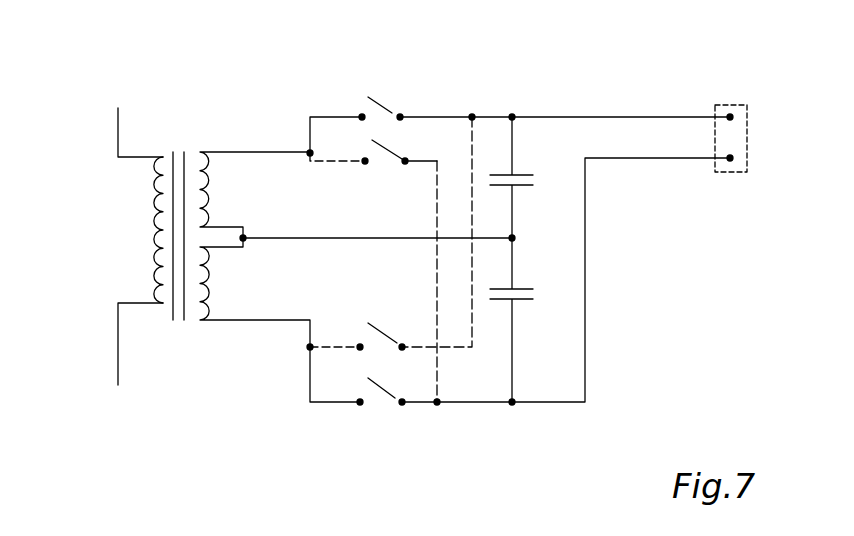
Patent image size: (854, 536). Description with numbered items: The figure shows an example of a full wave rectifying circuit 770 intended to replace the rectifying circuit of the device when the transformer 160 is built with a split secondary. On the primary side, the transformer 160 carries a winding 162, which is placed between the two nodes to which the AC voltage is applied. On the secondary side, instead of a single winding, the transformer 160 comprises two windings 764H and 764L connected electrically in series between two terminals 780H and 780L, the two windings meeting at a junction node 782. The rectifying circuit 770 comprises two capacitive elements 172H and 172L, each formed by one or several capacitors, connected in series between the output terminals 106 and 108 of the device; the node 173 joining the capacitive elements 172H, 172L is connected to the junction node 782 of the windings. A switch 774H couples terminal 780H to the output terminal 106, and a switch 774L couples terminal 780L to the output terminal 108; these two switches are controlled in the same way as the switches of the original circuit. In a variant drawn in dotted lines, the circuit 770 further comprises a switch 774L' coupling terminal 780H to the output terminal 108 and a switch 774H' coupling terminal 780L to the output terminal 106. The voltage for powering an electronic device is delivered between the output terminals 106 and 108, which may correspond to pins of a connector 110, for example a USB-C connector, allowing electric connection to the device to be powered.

The full wave rectifying circuit 770 is at (280, 55).
The transformer 160 is at (103, 295).
The winding 162 is at (150, 203).
The winding 764H is at (215, 190).
The winding 764L is at (228, 288).
The junction node 782 is at (247, 243).
The terminal 780H is at (308, 154).
The terminal 780L is at (308, 349).
The switch 774H is at (418, 89).
The switch 774L' is at (370, 183).
The switch 774H' is at (387, 311).
The switch 774L is at (376, 435).
The capacitive element 172H is at (527, 188).
The capacitive element 172L is at (527, 300).
The node 173 is at (515, 238).
The output terminal 106 is at (750, 118).
The output terminal 108 is at (750, 160).
The connector 110 is at (733, 173).